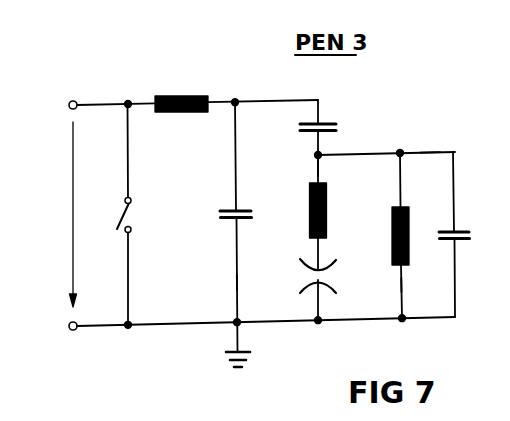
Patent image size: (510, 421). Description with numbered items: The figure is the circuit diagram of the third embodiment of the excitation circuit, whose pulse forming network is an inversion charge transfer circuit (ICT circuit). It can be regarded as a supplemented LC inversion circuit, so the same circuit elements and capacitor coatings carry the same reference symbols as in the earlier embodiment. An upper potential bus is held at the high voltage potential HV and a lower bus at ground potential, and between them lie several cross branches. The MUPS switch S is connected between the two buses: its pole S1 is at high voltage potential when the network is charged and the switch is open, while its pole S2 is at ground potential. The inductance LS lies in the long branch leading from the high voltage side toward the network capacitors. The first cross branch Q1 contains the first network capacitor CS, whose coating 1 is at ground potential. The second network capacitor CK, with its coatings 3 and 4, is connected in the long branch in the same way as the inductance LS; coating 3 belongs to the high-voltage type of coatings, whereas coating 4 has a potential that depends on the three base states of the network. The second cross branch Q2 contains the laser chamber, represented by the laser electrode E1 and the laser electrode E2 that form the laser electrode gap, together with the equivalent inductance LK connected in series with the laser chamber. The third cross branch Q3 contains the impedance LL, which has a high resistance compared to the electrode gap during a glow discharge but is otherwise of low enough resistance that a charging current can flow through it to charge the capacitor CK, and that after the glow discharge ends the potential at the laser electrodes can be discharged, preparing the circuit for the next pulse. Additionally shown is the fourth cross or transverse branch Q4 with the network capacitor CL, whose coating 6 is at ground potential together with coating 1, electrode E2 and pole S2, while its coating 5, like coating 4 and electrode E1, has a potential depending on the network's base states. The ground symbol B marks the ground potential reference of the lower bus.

The high voltage potential HV is at (72, 214).
The MUPS switch S is at (133, 220).
The pole of the MUPS switch S1 is at (131, 199).
The pole of the MUPS switch S2 is at (131, 231).
The inductance LS is at (172, 113).
The first network capacitor CS is at (222, 234).
The coating 1 is at (243, 219).
The first cross branch Q1 is at (236, 281).
The ground B is at (247, 364).
The second network capacitor CK is at (311, 117).
The coating 3 is at (323, 121).
The coating 4 is at (331, 133).
The second cross branch Q2 is at (318, 168).
The equivalent inductance LK is at (328, 213).
The laser electrode E1 is at (336, 264).
The laser electrode E2 is at (336, 287).
The fourth cross branch Q4 is at (430, 152).
The impedance LL is at (410, 222).
The third cross branch Q3 is at (402, 284).
The network capacitor CL is at (472, 241).
The coating 5 is at (459, 230).
The coating 6 is at (460, 242).